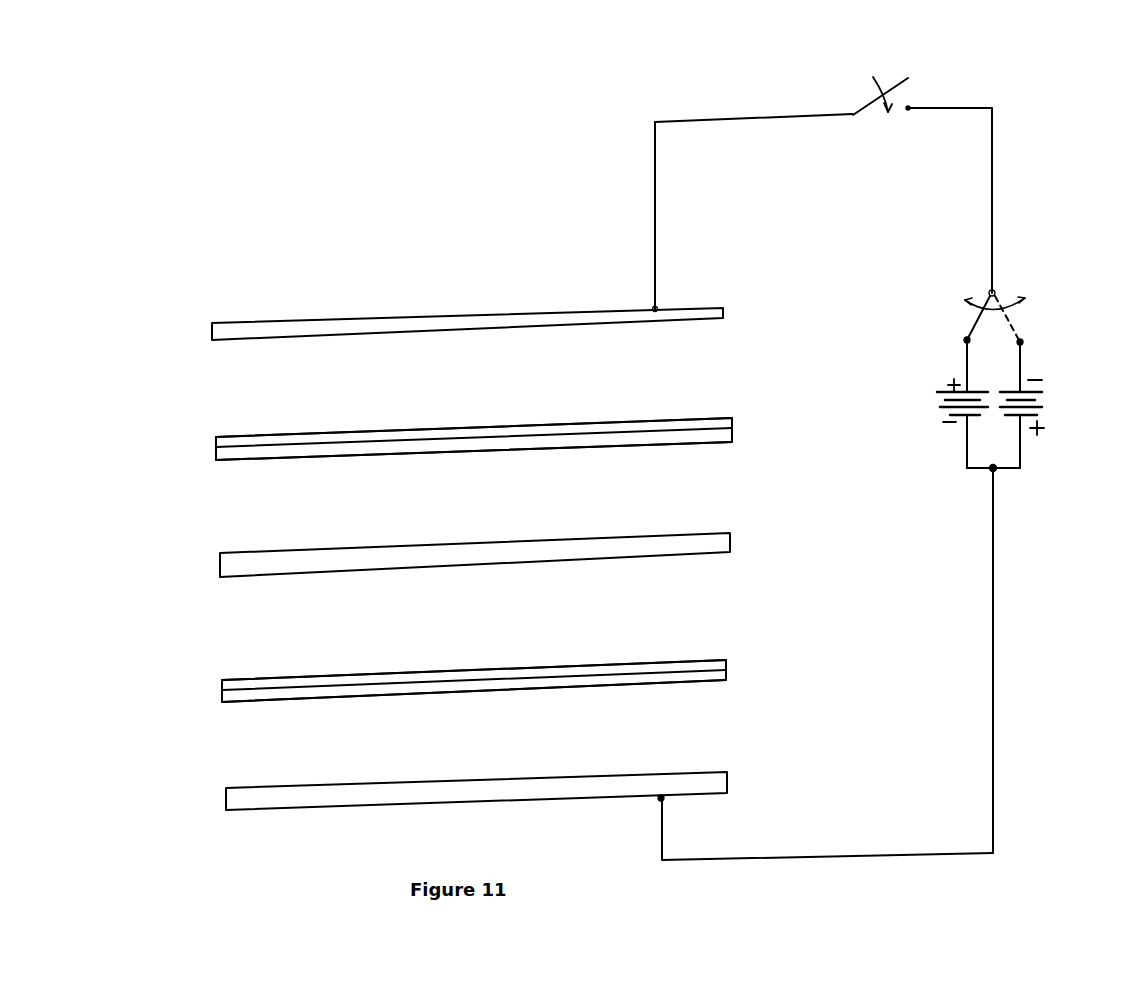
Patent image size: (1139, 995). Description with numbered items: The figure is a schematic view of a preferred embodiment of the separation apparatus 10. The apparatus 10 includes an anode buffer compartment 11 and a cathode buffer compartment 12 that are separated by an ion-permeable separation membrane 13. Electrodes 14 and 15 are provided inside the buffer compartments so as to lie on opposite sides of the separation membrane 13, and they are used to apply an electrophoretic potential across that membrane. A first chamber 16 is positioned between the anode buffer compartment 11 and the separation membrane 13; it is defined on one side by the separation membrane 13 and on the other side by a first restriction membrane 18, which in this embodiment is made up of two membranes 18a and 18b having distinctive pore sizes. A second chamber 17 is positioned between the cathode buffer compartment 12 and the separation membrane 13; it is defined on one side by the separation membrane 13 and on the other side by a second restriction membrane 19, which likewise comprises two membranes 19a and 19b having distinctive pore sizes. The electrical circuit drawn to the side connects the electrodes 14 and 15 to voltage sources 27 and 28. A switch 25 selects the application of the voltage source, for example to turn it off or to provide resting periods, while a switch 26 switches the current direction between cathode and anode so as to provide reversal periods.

The apparatus 10 is at (160, 238).
The anode buffer compartment 11 is at (488, 394).
The cathode buffer compartment 12 is at (478, 754).
The separation membrane 13 is at (733, 543).
The electrode 14 is at (717, 303).
The electrode 15 is at (728, 782).
The first chamber 16 is at (488, 511).
The second chamber 17 is at (488, 635).
The first restriction membrane 18 is at (735, 413).
The membrane 18a is at (215, 445).
The membrane 18b is at (215, 455).
The second restriction membrane 19 is at (730, 655).
The membrane 19a is at (220, 683).
The membrane 19b is at (220, 700).
The switch 25 is at (920, 85).
The switch 26 is at (1012, 292).
The voltage source 27 is at (1050, 402).
The voltage source 28 is at (930, 402).